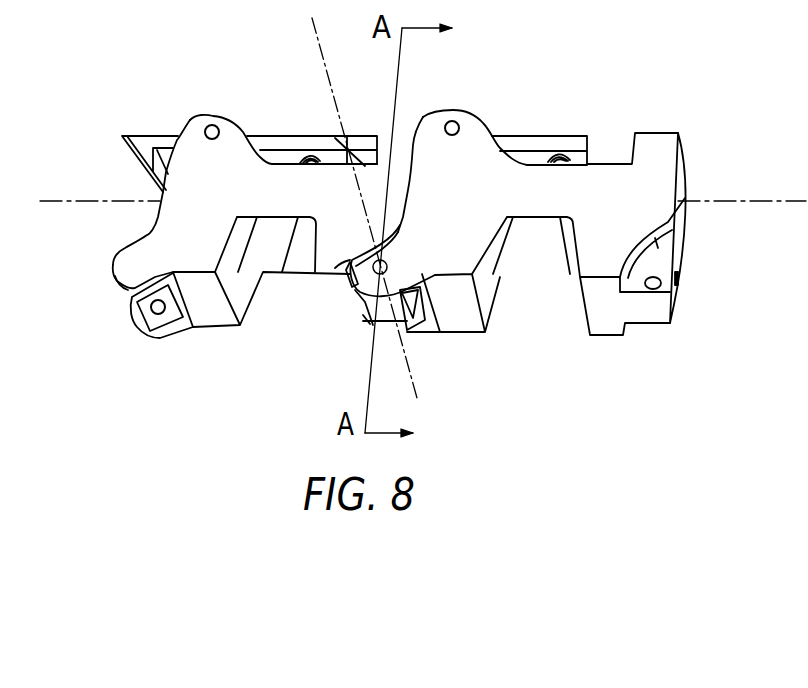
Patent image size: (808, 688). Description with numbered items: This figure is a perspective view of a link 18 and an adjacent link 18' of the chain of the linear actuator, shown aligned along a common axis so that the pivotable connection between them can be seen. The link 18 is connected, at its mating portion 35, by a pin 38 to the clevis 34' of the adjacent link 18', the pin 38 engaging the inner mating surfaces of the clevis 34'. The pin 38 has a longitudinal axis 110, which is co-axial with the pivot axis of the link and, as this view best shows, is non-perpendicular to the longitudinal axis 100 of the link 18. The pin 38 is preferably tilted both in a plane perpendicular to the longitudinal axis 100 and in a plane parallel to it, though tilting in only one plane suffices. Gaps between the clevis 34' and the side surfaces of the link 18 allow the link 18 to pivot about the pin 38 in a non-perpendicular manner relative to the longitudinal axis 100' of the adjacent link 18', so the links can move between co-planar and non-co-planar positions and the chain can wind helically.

The link 18 is at (245, 198).
The adjacent link 18' is at (529, 199).
The longitudinal axis 100 is at (100, 169).
The longitudinal axis of the adjacent link 100' is at (742, 169).
The longitudinal axis of the pin 110 is at (323, 60).
The pin 38 is at (340, 258).
The mating portion 35 is at (365, 302).
The clevis 34' is at (422, 334).